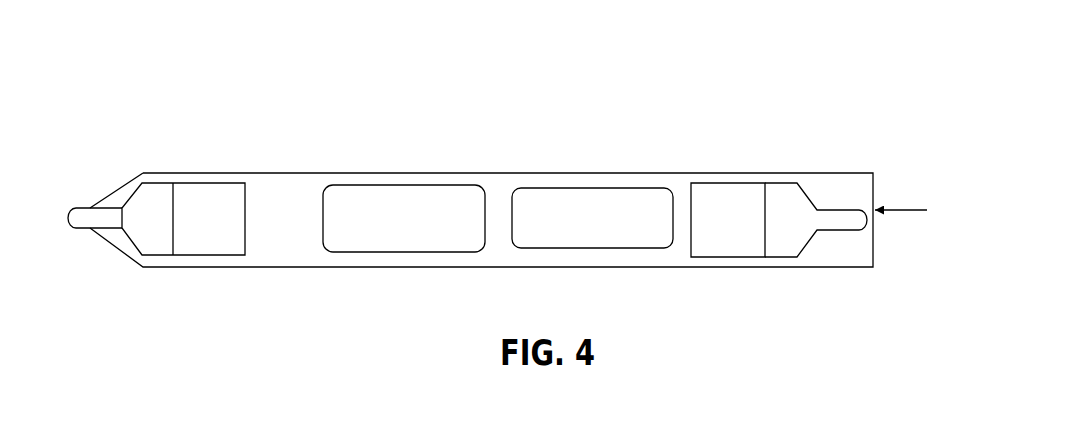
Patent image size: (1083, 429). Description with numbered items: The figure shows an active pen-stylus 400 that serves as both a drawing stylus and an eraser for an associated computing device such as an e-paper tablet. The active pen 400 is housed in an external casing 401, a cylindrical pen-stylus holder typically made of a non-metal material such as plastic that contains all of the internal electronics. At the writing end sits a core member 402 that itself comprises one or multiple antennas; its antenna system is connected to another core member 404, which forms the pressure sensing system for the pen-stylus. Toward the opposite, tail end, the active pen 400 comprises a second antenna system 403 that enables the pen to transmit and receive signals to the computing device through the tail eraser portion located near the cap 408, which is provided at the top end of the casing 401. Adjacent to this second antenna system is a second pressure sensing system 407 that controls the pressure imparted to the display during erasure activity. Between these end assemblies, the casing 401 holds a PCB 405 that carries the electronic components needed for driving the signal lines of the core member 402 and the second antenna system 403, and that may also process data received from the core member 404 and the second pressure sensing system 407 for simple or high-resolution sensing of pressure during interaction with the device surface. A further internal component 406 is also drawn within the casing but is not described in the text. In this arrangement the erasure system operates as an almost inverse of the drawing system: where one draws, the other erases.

The active pen-stylus 400 is at (523, 153).
The external casing 401 is at (473, 172).
The core member 402 is at (122, 206).
The second antenna system 403 is at (830, 206).
The core member 404 is at (210, 182).
The PCB 405 is at (381, 185).
The battery 406 is at (592, 187).
The second pressure sensing system 407 is at (726, 182).
The cap 408 is at (927, 210).